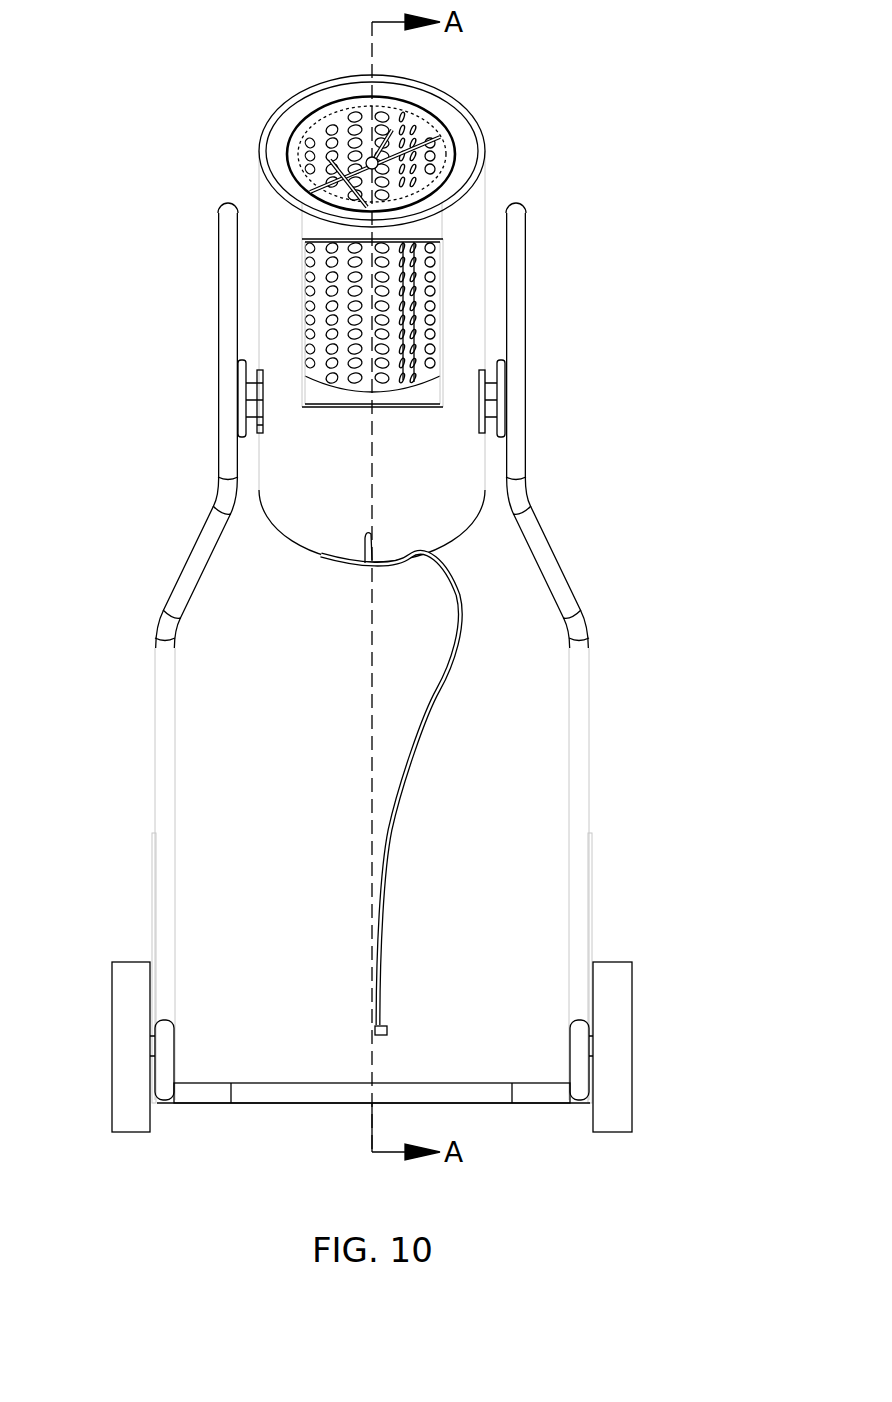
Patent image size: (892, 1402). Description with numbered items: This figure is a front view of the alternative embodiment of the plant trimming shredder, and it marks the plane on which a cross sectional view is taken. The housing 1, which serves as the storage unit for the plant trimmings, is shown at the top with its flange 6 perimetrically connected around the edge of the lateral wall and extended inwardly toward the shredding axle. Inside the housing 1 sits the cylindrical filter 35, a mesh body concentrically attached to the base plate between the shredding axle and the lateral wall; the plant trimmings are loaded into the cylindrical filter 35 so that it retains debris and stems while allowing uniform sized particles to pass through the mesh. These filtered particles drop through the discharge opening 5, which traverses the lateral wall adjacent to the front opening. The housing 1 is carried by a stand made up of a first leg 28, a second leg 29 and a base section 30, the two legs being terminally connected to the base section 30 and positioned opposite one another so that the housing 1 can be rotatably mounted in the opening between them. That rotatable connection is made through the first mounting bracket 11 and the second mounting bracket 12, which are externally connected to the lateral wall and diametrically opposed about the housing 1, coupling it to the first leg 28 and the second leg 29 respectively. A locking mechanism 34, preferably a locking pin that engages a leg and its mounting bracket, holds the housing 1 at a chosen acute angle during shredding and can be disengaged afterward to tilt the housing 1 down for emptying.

The housing 1 is at (315, 78).
The discharge opening 5 is at (336, 398).
The flange 6 is at (460, 128).
The first mounting bracket 11 is at (262, 402).
The second mounting bracket 12 is at (482, 423).
The first leg 28 is at (230, 216).
The second leg 29 is at (515, 212).
The base section 30 is at (303, 1090).
The locking mechanism 34 is at (232, 395).
The cylindrical filter 35 is at (316, 258).